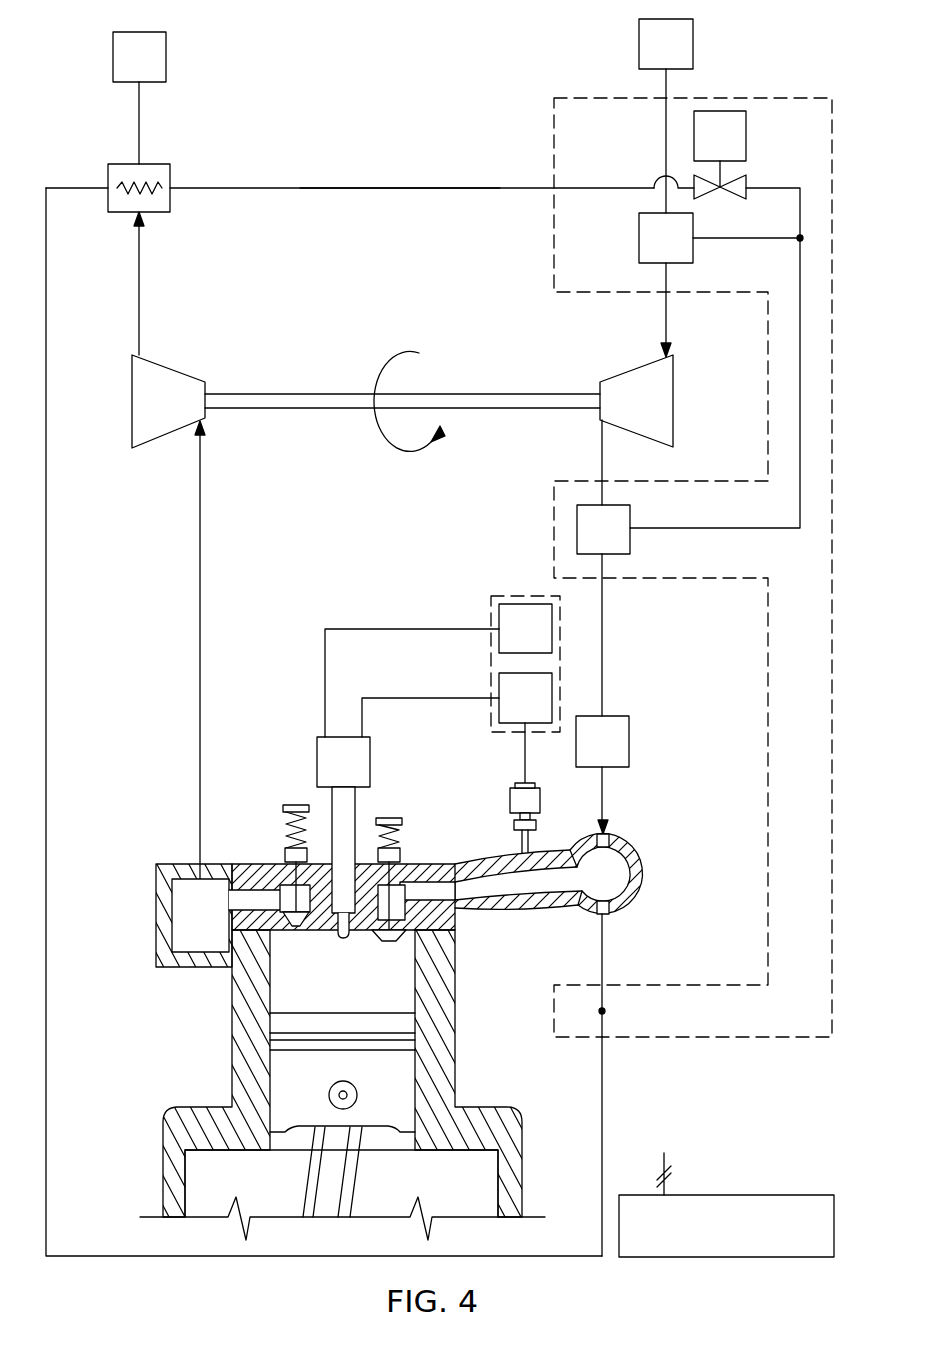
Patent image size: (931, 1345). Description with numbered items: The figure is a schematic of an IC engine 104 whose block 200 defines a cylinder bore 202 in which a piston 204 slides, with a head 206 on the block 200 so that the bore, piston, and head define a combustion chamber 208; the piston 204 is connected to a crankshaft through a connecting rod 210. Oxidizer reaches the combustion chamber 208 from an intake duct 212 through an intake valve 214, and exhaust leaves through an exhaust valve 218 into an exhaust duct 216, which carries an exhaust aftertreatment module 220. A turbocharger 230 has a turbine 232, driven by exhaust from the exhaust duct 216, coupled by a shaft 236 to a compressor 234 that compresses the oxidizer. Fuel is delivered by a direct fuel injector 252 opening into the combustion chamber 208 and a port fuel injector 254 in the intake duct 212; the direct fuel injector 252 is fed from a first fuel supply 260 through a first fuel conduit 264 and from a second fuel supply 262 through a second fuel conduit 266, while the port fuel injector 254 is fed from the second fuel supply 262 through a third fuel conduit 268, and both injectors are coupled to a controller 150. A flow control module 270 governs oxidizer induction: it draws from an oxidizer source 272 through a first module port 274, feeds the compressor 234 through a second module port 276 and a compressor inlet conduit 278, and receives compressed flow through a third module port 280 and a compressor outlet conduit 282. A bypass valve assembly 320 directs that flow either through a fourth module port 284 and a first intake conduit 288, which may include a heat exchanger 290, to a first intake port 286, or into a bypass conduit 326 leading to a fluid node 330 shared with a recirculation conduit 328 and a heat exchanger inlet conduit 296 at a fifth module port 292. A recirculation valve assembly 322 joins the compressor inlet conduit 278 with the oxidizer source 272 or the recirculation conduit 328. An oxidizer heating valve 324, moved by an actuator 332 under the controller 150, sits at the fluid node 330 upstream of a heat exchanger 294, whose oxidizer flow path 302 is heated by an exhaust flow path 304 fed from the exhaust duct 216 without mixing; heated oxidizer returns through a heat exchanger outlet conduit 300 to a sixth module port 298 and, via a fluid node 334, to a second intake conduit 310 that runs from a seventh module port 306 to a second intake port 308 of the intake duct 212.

The IC engine 104 is at (757, 85).
The controller 150 is at (716, 1233).
The block 200 is at (231, 1057).
The cylinder bore 202 is at (271, 985).
The piston 204 is at (373, 1088).
The head 206 is at (457, 916).
The combustion chamber 208 is at (361, 980).
The connecting rod 210 is at (358, 1170).
The intake duct 212 is at (646, 852).
The intake valve 214 is at (414, 878).
The exhaust duct 216 is at (140, 318).
The exhaust valve 218 is at (282, 870).
The exhaust aftertreatment module 220 is at (127, 67).
The turbocharger 230 is at (288, 346).
The turbine 232 is at (143, 414).
The compressor 234 is at (633, 414).
The shaft 236 is at (517, 392).
The direct fuel injector 252 is at (331, 773).
The port fuel injector 254 is at (510, 796).
The first fuel supply 260 is at (513, 638).
The second fuel supply 262 is at (513, 707).
The first fuel conduit 264 is at (325, 671).
The second fuel conduit 266 is at (418, 697).
The third fuel conduit 268 is at (525, 760).
The flow control module 270 is at (736, 1041).
The oxidizer source 272 is at (654, 55).
The first module port 274 is at (665, 97).
The second module port 276 is at (660, 292).
The compressor inlet conduit 278 is at (668, 320).
The third module port 280 is at (602, 481).
The compressor outlet conduit 282 is at (602, 446).
The fourth module port 284 is at (603, 585).
The first intake port 286 is at (612, 830).
The first intake conduit 288 is at (603, 628).
The heat exchanger 290 is at (591, 757).
The fifth module port 292 is at (553, 190).
The heat exchanger 294 is at (157, 165).
The heat exchanger inlet conduit 296 is at (341, 186).
The sixth module port 298 is at (604, 1040).
The heat exchanger outlet conduit 300 is at (90, 1253).
The oxidizer flow path 302 is at (150, 190).
The exhaust flow path 304 is at (124, 173).
The seventh module port 306 is at (604, 985).
The second intake port 308 is at (606, 915).
The second intake conduit 310 is at (602, 953).
The bypass valve assembly 320 is at (591, 544).
The recirculation valve assembly 322 is at (654, 253).
The oxidizer heating valve 324 is at (750, 185).
The bypass conduit 326 is at (800, 376).
The recirculation conduit 328 is at (776, 237).
The fluid node 330 is at (799, 242).
The actuator 332 is at (708, 151).
The fluid node 334 is at (606, 1011).